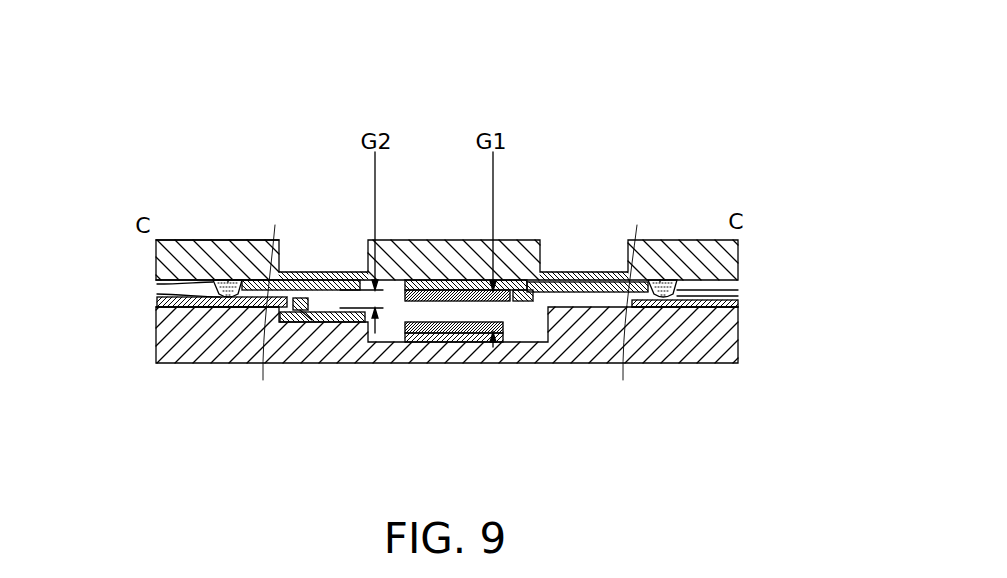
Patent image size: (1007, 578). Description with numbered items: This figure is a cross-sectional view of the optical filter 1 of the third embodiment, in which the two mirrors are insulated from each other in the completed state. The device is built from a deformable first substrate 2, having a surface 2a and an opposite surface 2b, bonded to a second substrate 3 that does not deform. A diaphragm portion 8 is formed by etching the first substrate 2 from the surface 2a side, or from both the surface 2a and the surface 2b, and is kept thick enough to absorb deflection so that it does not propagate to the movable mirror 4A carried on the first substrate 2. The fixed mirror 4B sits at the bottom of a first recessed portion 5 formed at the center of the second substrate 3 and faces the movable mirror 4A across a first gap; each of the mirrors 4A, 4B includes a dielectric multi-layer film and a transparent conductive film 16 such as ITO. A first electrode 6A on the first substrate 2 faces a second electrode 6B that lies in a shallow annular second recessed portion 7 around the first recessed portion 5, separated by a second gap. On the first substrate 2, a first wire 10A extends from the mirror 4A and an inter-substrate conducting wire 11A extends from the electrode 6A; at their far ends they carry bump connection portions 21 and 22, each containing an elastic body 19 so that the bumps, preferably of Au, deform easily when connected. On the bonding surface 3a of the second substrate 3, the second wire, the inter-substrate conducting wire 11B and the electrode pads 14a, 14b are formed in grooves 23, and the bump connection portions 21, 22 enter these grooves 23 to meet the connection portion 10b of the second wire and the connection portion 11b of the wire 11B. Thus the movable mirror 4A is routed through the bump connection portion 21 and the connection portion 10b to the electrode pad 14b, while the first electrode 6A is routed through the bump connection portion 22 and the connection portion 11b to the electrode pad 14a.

The piezoelectric device 1 is at (725, 125).
The first substrate 2 is at (738, 245).
The surface 2a is at (170, 240).
The surface 2b is at (152, 287).
The second substrate 3 is at (728, 347).
The bonding surface 3a is at (157, 305).
The mirror 4A is at (413, 282).
The mirror 4B is at (428, 338).
The first recessed portion 5 is at (376, 333).
The electrode 6A is at (303, 272).
The electrode 6B is at (338, 318).
The second recessed portion 7 is at (300, 308).
The diaphragm portion 8 is at (341, 272).
The first wire 10A is at (557, 281).
The connection portion 10b is at (660, 308).
The inter-substrate conducting wire 11A is at (252, 282).
The inter-substrate conducting wire 11B is at (263, 305).
The connection portion 11b is at (215, 310).
The electrode pad 14a is at (168, 318).
The electrode pad 14b is at (740, 303).
The conductive film 16 is at (455, 291).
The elastic body 19 is at (232, 282).
The bump connection portion 21 is at (673, 290).
The bump connection portion 22 is at (213, 288).
The groove 23 is at (157, 300).